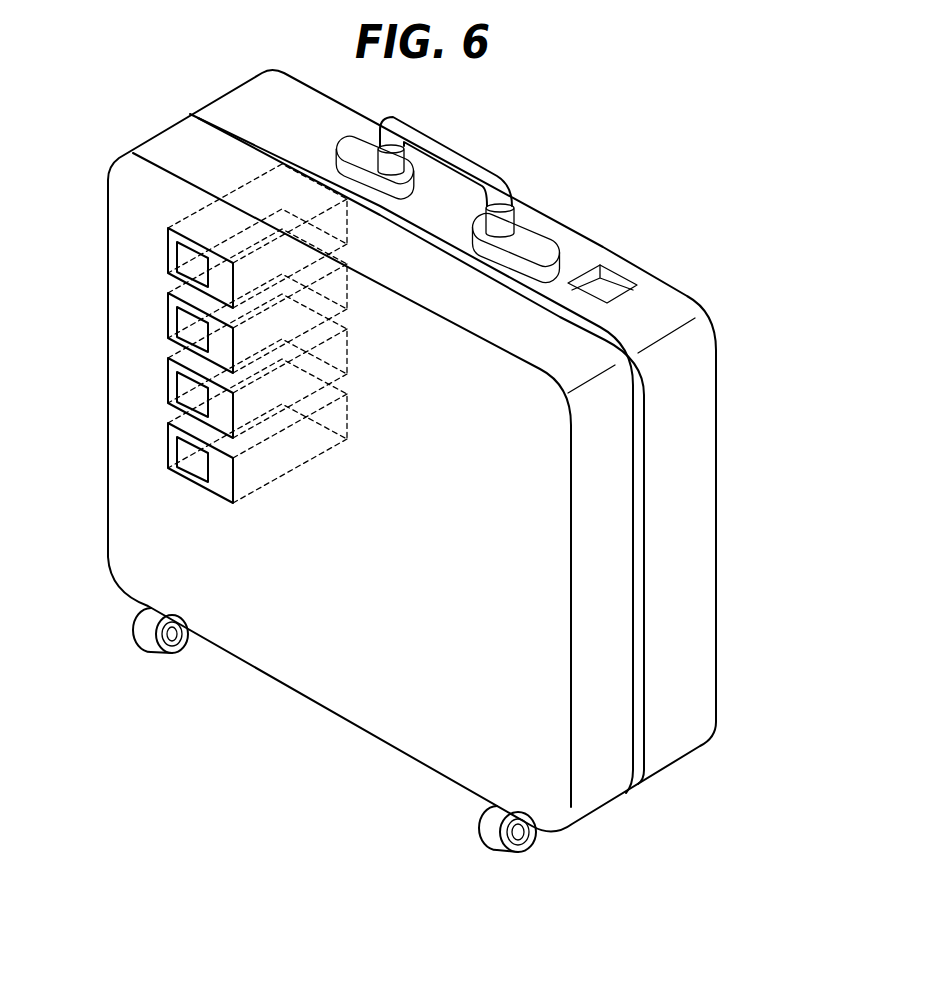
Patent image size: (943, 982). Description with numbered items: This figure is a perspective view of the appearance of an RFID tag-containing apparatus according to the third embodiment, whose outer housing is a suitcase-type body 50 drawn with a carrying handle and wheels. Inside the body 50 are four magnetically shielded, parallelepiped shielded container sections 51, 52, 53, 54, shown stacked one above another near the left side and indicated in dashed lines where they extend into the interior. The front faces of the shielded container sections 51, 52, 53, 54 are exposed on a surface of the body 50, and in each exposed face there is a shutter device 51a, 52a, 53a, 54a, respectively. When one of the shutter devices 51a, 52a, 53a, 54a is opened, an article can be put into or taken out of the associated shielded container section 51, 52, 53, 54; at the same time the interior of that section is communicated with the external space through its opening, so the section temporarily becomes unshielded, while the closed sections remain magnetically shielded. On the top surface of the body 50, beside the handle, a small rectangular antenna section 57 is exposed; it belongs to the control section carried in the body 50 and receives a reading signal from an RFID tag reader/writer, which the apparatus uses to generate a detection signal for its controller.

The suitcase-type body 50 is at (570, 183).
The shielded container section 51 is at (168, 248).
The shutter device 51a is at (177, 259).
The shielded container section 52 is at (168, 313).
The shutter device 52a is at (177, 324).
The shielded container section 53 is at (168, 378).
The shutter device 53a is at (177, 389).
The shielded container section 54 is at (168, 443).
The shutter device 54a is at (177, 454).
The antenna section 57 is at (610, 290).